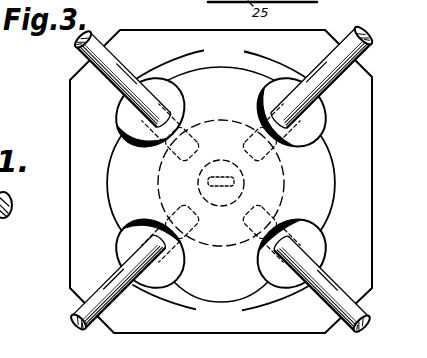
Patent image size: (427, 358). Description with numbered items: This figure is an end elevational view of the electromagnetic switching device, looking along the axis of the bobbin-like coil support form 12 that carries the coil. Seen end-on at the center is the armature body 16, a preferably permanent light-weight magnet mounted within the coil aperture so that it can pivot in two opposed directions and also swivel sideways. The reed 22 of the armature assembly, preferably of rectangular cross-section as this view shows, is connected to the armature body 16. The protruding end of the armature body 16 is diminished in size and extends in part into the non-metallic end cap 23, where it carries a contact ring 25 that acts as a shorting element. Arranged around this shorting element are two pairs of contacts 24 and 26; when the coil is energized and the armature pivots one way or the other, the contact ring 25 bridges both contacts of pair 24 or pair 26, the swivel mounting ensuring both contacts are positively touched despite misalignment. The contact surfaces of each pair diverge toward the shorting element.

The coil support form 12 is at (70, 125).
The armature body 16 is at (284, 162).
The reed 22 is at (221, 183).
The non-metallic end cap 23 is at (323, 134).
The pair of contacts 24 is at (222, 302).
The contact ring 25 is at (184, 187).
The pair of contacts 26 is at (222, 67).